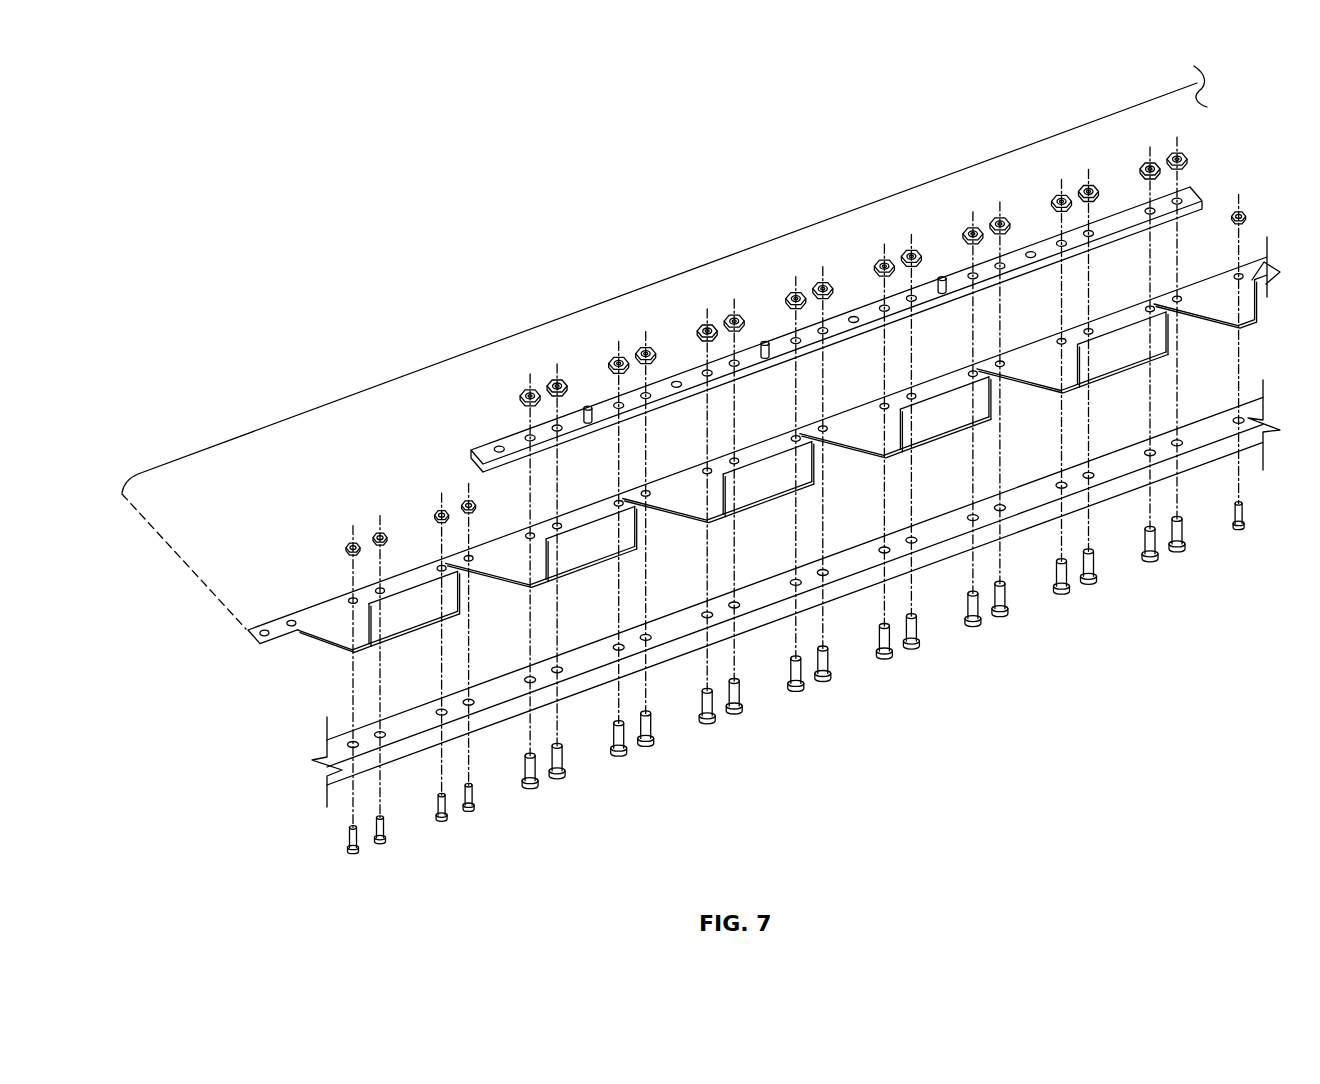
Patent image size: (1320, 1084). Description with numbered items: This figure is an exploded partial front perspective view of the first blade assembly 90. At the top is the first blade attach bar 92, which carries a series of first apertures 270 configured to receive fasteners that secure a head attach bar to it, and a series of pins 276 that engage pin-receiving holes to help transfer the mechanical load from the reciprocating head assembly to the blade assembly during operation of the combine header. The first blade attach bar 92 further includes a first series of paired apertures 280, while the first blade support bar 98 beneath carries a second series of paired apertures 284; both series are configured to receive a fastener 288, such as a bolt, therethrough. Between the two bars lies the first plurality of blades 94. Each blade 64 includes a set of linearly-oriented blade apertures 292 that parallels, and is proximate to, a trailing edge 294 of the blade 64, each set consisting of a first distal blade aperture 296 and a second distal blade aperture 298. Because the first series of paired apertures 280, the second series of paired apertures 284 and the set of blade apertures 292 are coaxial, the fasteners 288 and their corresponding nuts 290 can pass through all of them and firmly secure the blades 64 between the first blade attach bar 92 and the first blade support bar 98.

The first blade assembly 90 is at (272, 320).
The first blade attach bar 92 is at (516, 468).
The first plurality of blades 94 is at (662, 284).
The first blade support bar 98 is at (843, 582).
The blade 64 is at (520, 567).
The first apertures 270 is at (500, 445).
The pins 276 is at (589, 403).
The first series of paired apertures 280 is at (559, 435).
The second series of paired apertures 284 is at (559, 664).
The fastener 288 is at (527, 792).
The nut 290 is at (528, 389).
The linearly-oriented blade apertures 292 is at (971, 368).
The trailing edge 294 is at (1022, 343).
The first distal blade aperture 296 is at (833, 448).
The second distal blade aperture 298 is at (860, 438).